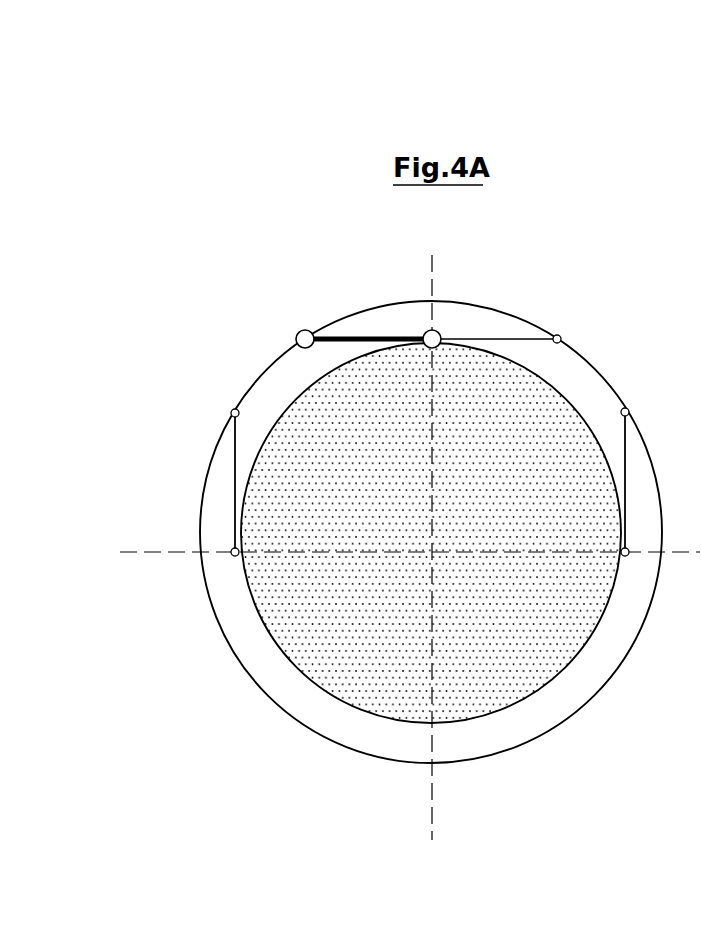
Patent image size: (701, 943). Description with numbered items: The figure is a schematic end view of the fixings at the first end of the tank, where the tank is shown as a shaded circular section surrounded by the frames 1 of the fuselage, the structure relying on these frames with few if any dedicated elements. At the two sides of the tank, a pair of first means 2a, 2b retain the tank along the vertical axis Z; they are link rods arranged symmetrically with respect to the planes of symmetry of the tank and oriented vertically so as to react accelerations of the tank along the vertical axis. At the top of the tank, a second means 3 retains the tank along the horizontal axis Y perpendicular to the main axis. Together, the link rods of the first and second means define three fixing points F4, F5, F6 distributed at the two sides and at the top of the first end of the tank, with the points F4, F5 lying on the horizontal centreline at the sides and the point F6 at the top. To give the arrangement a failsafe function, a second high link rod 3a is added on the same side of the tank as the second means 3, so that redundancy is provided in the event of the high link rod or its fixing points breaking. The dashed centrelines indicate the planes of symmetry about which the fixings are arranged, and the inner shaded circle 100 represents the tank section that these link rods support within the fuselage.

The frames 1 is at (608, 683).
The inner disc (pupil / aperture region) 100 is at (320, 652).
The first means of retaining the tank 2a is at (235, 463).
The first means of retaining the tank 2b is at (625, 454).
The second means of retaining the tank 3 is at (497, 338).
The second high link rod 3a is at (367, 337).
The point F4 is at (258, 537).
The point F5 is at (605, 537).
The point F6 is at (451, 358).